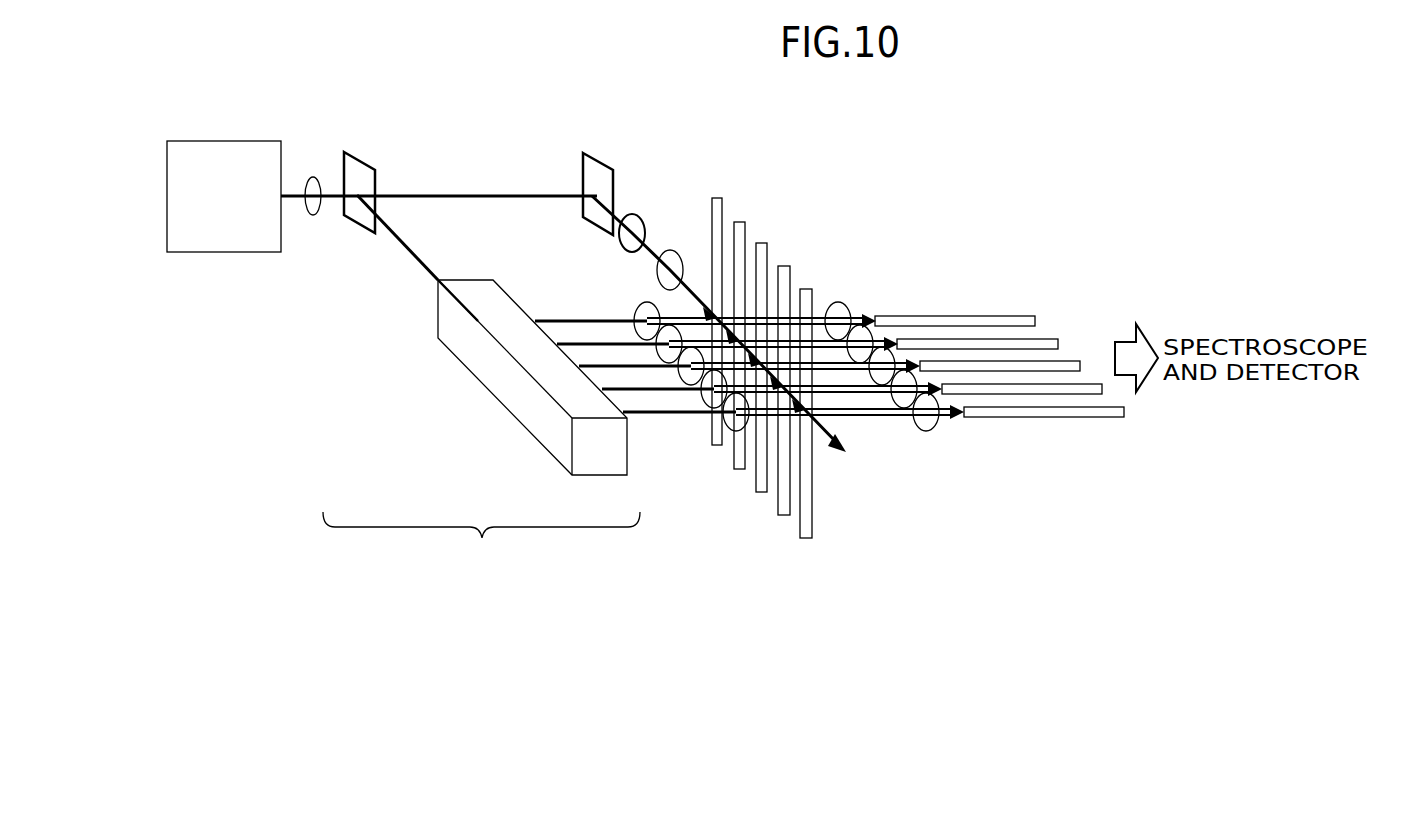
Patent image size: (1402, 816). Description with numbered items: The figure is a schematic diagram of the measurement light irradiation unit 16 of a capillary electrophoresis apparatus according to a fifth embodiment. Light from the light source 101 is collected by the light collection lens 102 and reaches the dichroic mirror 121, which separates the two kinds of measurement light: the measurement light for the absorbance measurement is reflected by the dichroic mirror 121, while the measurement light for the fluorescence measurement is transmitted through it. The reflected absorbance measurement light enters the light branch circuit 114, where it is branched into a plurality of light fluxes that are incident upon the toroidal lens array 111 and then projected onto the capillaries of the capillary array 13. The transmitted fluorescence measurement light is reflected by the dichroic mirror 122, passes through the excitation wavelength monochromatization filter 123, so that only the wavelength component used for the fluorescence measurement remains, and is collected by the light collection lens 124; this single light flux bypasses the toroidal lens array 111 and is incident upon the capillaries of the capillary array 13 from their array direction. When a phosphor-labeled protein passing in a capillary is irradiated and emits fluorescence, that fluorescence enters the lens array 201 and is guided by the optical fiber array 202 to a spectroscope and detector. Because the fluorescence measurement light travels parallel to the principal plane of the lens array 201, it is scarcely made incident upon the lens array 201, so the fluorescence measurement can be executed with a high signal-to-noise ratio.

The light source 101 is at (233, 139).
The light collection lens 102 is at (311, 176).
The dichroic mirror 121 is at (357, 154).
The dichroic mirror 122 is at (583, 163).
The excitation wavelength monochromatization filter 123 is at (632, 215).
The light collection lens 124 is at (671, 251).
The light branch circuit 114 is at (458, 338).
The toroidal lens array 111 is at (633, 282).
The capillary array 13 is at (814, 551).
The lens array 201 is at (818, 312).
The optical fiber array 202 is at (922, 313).
The measurement light irradiation unit 16 is at (481, 542).